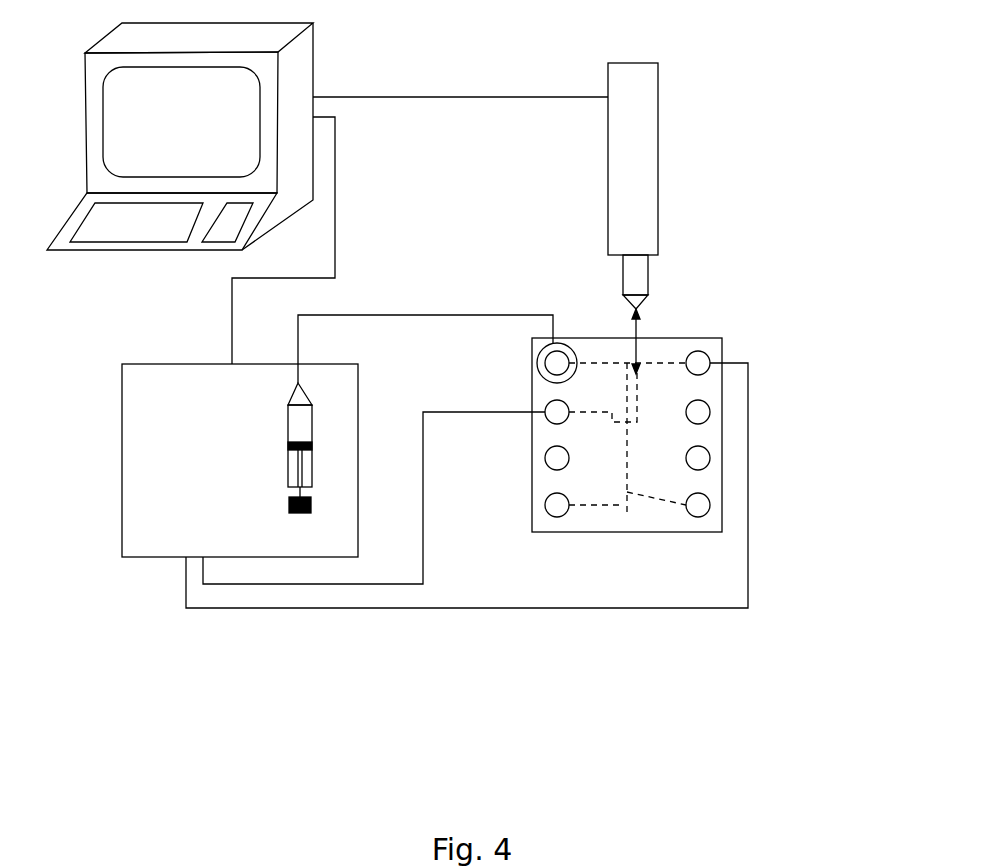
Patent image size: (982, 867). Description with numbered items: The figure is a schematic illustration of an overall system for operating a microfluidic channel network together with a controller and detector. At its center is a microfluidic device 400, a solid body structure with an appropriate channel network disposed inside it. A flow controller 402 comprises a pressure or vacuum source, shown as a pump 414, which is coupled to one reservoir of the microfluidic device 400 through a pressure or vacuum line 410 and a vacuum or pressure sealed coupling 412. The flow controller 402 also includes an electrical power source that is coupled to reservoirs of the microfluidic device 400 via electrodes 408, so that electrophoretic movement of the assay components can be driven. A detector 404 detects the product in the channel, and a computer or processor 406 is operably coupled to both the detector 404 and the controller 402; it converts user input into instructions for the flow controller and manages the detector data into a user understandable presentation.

The microfluidic device 400 is at (702, 337).
The flow controller 402 is at (240, 337).
The detector 404 is at (519, 186).
The computer or processor 406 is at (180, 136).
The electrodes 408 is at (750, 492).
The pressure or vacuum line 410 is at (417, 310).
The vacuum or pressure sealed coupling 412 is at (575, 362).
The pump 414 is at (287, 425).